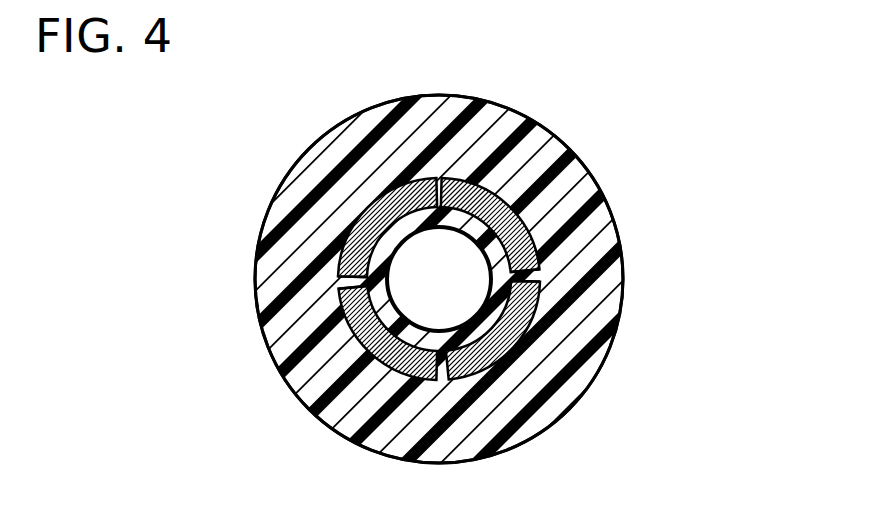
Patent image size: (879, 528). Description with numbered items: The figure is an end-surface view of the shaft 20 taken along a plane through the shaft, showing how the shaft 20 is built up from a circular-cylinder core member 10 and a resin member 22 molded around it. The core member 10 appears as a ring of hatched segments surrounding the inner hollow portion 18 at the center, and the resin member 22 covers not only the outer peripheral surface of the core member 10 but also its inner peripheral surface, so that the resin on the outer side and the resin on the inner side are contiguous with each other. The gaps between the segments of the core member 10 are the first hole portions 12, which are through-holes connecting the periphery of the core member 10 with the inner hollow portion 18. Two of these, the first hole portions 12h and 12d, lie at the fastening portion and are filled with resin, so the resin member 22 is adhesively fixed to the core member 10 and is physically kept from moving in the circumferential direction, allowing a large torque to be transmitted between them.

The core member 10 is at (392, 185).
The first hole portions 12 is at (433, 200).
The first hole portion 12h is at (338, 285).
The first hole portion 12d is at (541, 287).
The inner hollow portion 18 is at (453, 292).
The shaft 20 is at (647, 120).
The resin member 22 is at (498, 102).